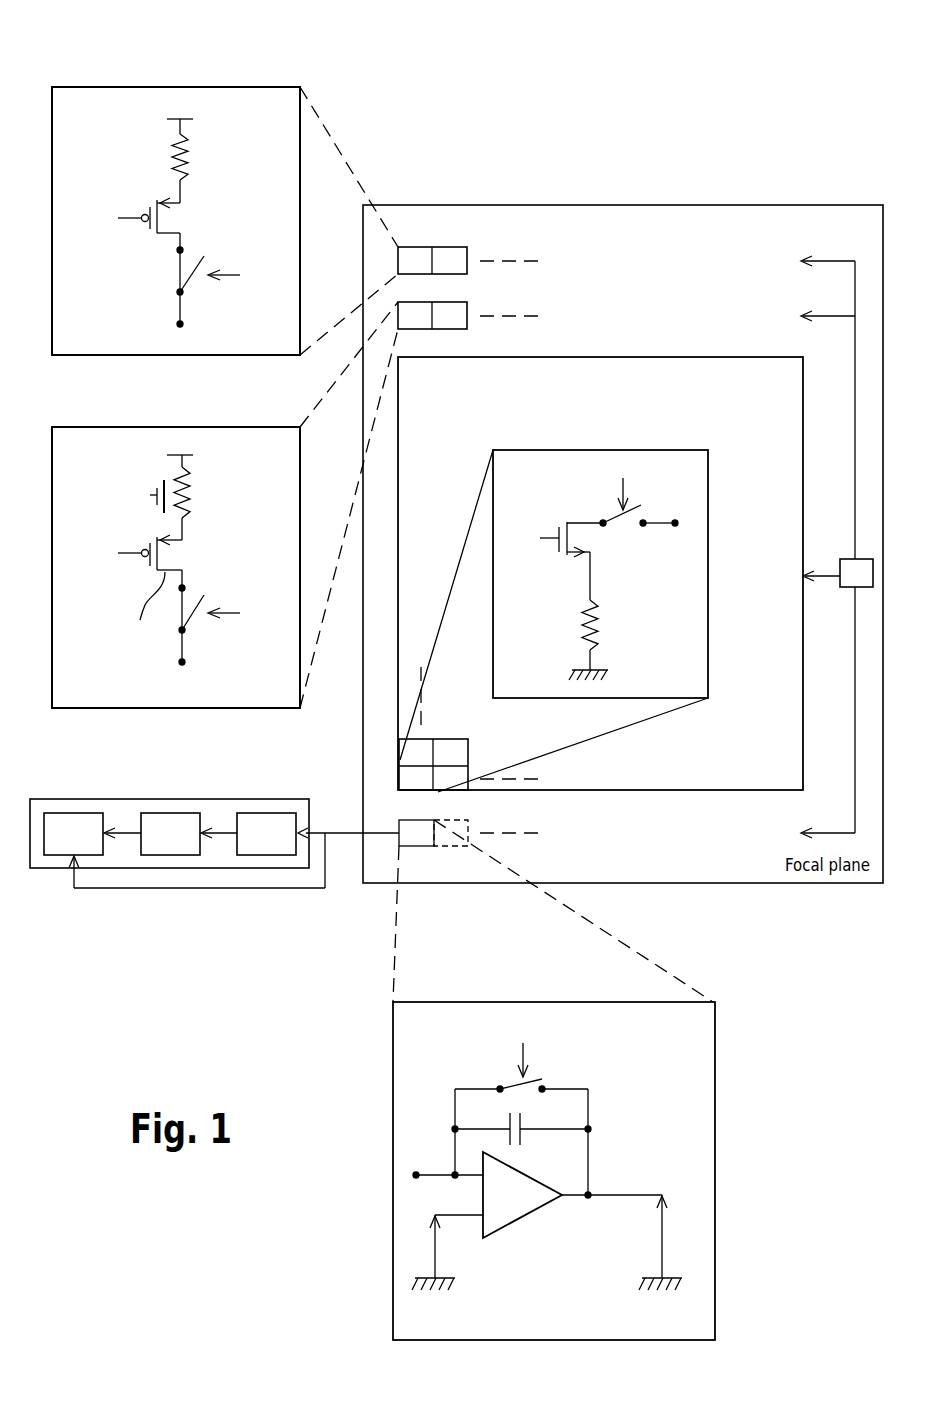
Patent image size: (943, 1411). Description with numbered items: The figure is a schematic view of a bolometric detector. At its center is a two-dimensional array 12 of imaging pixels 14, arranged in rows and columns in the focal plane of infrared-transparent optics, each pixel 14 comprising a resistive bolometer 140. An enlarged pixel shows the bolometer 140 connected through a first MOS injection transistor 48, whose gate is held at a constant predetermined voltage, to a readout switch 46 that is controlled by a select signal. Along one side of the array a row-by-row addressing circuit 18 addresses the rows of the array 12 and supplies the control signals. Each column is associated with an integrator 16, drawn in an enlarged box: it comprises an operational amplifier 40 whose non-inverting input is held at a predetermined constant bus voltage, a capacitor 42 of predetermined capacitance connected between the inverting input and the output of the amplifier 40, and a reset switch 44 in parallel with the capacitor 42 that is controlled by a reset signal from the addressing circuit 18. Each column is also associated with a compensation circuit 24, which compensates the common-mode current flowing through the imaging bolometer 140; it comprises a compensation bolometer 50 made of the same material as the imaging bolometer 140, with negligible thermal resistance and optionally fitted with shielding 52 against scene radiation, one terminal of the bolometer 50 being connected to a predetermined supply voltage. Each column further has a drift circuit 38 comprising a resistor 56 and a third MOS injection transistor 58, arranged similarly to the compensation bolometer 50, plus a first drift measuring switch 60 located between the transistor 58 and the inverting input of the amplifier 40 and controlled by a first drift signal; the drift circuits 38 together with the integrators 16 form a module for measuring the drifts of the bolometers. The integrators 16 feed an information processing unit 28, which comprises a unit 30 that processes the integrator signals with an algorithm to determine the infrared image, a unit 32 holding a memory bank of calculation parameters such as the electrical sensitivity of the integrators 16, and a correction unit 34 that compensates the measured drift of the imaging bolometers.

The two-dimensional array 12 is at (654, 357).
The imaging pixel 14 is at (708, 562).
The integrator 16 is at (715, 1120).
The row-by-row addressing circuit 18 is at (847, 565).
The compensation circuit 24 is at (107, 427).
The information processing unit 28 is at (153, 799).
The processing unit 30 is at (73, 834).
The memory bank unit 32 is at (152, 834).
The correction unit 34 is at (248, 834).
The drift circuit 38 is at (215, 87).
The operational amplifier 40 is at (525, 1205).
The capacitor 42 is at (525, 1133).
The reset switch 44 is at (512, 1085).
The readout switch 46 is at (623, 518).
The first MOS injection transistor 48 is at (588, 542).
The compensation bolometer 50 is at (188, 485).
The shielding 52 is at (150, 495).
The resistor 56 is at (186, 153).
The third MOS injection transistor 58 is at (168, 220).
The first drift measuring switch 60 is at (183, 272).
The resistive bolometer 140 is at (580, 635).